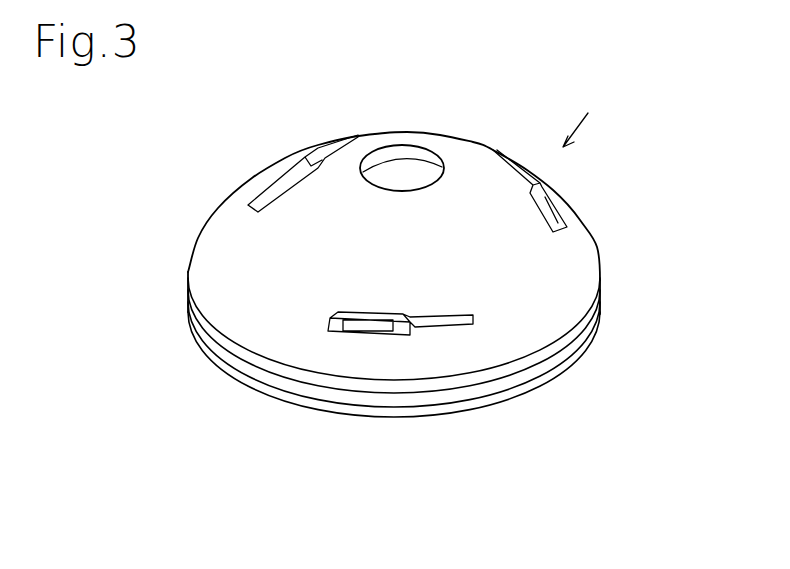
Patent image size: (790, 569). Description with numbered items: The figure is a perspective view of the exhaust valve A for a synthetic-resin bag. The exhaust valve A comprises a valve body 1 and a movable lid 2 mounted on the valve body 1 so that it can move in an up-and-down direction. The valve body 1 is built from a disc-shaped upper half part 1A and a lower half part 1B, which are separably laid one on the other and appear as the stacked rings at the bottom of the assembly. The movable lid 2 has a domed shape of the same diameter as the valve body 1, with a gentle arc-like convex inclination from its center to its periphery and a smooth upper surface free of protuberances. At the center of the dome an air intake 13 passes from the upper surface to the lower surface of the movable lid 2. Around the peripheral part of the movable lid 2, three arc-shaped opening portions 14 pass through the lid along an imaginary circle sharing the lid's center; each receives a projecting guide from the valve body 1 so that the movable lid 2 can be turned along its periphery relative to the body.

The valve body 1 is at (402, 377).
The upper half part 1A is at (537, 370).
The lower half part 1B is at (505, 396).
The movable lid 2 is at (577, 264).
The air intake 13 is at (401, 168).
The arc-shaped opening portion 14 is at (306, 160).
The exhaust valve A is at (583, 117).